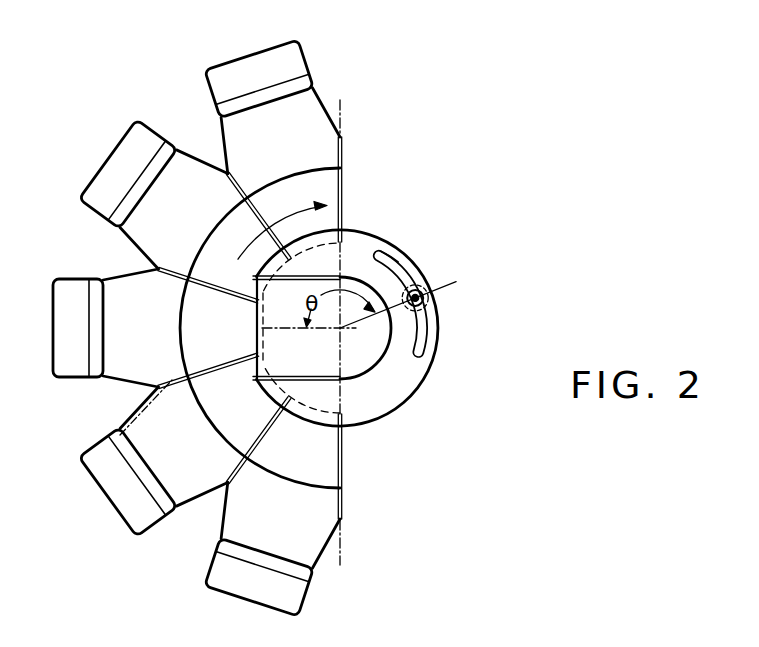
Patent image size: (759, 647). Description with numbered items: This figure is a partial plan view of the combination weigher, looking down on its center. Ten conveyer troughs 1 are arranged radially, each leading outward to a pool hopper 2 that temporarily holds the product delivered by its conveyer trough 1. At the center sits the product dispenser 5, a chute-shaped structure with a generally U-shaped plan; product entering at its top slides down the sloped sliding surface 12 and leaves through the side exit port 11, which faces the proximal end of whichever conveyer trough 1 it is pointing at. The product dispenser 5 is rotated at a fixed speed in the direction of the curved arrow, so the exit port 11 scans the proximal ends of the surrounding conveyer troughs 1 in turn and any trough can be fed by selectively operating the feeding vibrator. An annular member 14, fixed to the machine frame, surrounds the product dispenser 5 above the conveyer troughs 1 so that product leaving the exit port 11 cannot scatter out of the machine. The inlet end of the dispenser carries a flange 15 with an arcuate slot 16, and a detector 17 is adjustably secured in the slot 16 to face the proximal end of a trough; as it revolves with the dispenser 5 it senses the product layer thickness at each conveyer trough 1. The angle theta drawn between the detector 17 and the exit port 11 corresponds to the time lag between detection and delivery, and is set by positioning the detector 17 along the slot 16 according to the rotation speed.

The conveyer trough 1 is at (300, 120).
The pool hopper 2 is at (265, 48).
The product dispenser 5 is at (425, 380).
The side exit port 11 is at (257, 328).
The sloped sliding surface 12 is at (333, 346).
The annular member 14 is at (338, 193).
The flange 15 is at (437, 336).
The arcuate slot 16 is at (404, 249).
The detector 17 is at (427, 284).